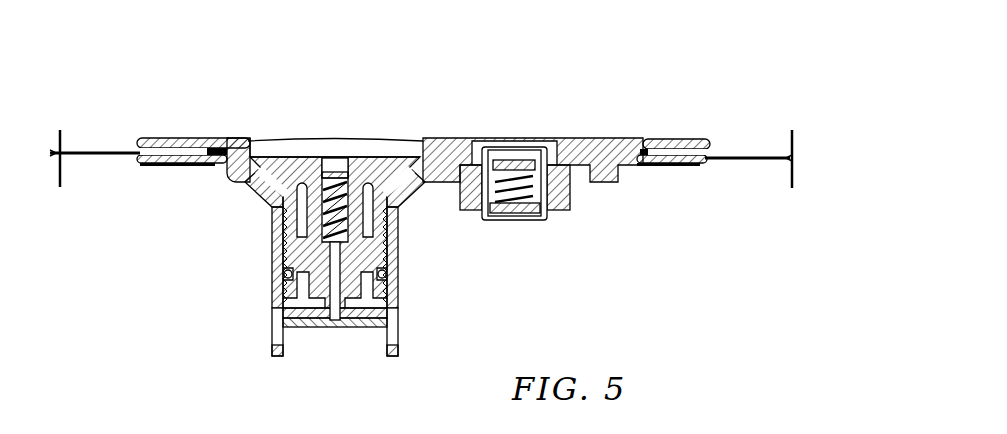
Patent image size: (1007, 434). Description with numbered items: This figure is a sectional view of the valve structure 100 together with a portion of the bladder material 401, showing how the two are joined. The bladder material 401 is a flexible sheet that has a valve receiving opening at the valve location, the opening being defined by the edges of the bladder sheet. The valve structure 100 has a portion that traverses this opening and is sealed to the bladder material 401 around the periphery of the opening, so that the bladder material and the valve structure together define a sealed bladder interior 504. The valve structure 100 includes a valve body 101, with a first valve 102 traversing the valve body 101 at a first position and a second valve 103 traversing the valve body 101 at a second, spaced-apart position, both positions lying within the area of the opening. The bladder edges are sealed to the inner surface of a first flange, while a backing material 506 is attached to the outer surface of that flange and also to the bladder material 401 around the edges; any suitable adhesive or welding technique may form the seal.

The valve structure 100 is at (690, 56).
The valve body 101 is at (449, 134).
The first valve 102 is at (293, 128).
The second valve 103 is at (518, 134).
The bladder material 401 is at (75, 155).
The sealed bladder interior 504 is at (500, 295).
The backing material 506 is at (727, 160).